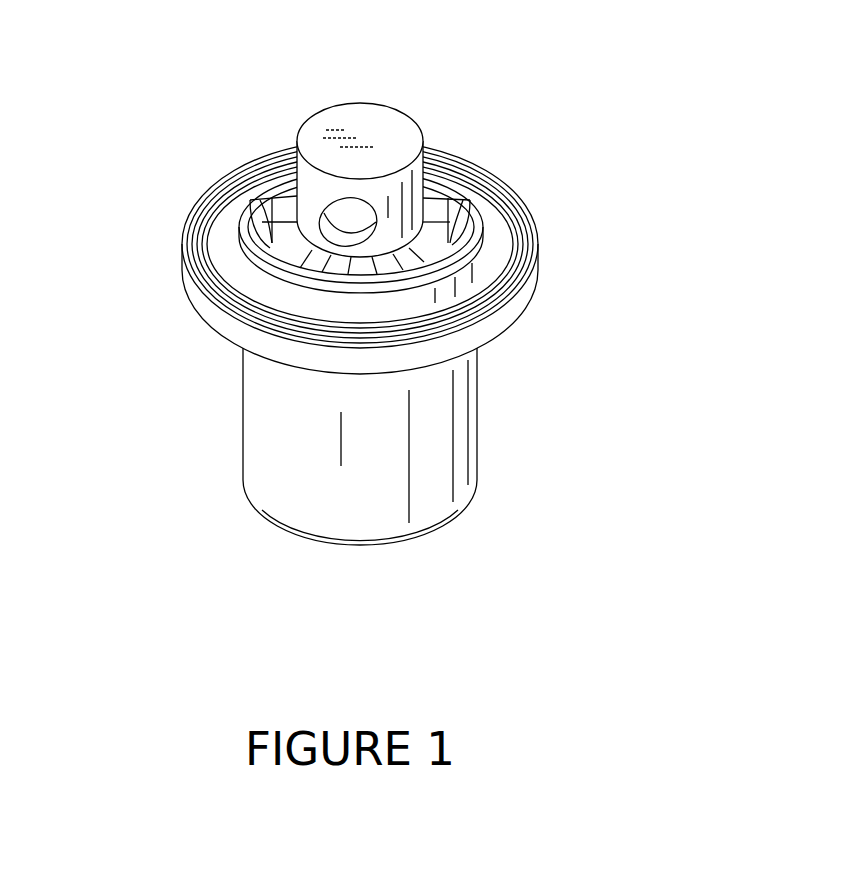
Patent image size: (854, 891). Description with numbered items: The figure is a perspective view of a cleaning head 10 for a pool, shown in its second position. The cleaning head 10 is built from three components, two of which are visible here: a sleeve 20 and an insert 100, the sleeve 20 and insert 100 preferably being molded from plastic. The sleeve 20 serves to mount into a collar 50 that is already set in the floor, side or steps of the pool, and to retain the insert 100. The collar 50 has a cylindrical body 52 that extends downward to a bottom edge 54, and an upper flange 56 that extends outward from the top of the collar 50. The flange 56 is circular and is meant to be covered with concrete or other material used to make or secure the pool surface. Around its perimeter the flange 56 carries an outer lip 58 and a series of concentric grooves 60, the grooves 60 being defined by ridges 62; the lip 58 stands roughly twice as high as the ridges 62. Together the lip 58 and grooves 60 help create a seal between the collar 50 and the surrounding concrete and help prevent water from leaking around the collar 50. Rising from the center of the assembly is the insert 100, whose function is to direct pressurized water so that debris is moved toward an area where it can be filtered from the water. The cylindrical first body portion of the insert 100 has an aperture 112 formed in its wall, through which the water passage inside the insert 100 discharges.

The cleaning head 10 is at (620, 80).
The sleeve 20 is at (310, 303).
The collar 50 is at (496, 434).
The cylindrical body 52 is at (479, 383).
The bottom edge 54 is at (456, 516).
The upper flange 56 is at (166, 270).
The outer lip 58 is at (205, 195).
The grooves 60 is at (215, 230).
The ridges 62 is at (238, 172).
The insert 100 is at (432, 118).
The aperture 112 is at (338, 222).